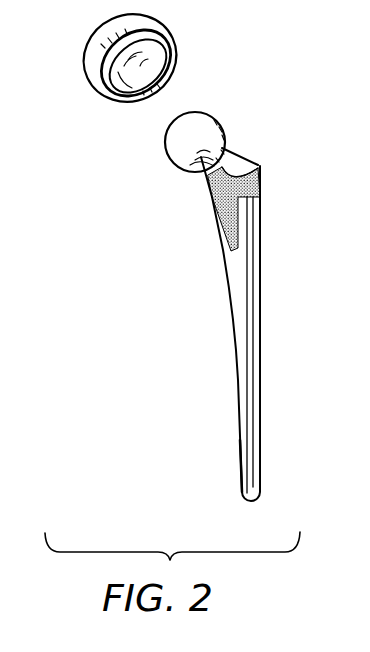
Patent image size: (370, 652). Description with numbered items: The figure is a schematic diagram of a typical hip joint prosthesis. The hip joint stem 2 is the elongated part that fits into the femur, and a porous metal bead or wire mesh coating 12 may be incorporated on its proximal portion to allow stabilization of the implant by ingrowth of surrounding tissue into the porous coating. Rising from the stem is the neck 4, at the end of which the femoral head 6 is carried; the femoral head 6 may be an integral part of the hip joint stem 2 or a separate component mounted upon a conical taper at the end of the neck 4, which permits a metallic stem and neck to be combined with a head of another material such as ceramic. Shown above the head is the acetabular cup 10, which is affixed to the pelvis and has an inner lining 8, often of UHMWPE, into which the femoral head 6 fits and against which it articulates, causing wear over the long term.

The hip joint stem 2 is at (236, 318).
The neck 4 is at (205, 177).
The femoral head 6 is at (172, 151).
The inner lining 8 is at (122, 90).
The acetabular cup 10 is at (102, 41).
The porous metal bead or wire mesh coating 12 is at (215, 219).